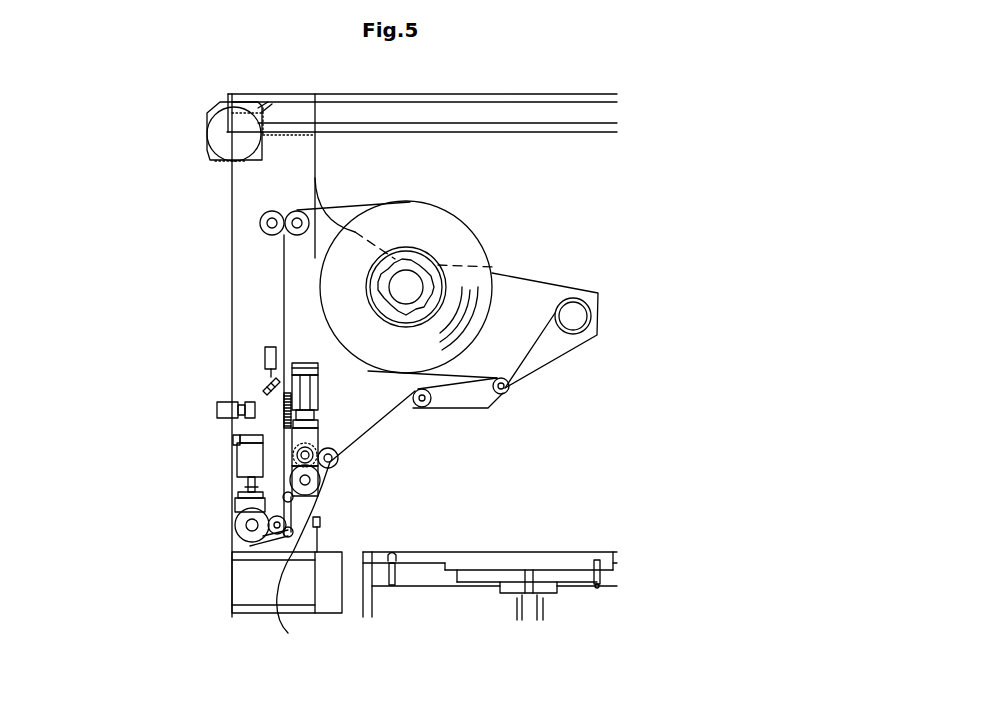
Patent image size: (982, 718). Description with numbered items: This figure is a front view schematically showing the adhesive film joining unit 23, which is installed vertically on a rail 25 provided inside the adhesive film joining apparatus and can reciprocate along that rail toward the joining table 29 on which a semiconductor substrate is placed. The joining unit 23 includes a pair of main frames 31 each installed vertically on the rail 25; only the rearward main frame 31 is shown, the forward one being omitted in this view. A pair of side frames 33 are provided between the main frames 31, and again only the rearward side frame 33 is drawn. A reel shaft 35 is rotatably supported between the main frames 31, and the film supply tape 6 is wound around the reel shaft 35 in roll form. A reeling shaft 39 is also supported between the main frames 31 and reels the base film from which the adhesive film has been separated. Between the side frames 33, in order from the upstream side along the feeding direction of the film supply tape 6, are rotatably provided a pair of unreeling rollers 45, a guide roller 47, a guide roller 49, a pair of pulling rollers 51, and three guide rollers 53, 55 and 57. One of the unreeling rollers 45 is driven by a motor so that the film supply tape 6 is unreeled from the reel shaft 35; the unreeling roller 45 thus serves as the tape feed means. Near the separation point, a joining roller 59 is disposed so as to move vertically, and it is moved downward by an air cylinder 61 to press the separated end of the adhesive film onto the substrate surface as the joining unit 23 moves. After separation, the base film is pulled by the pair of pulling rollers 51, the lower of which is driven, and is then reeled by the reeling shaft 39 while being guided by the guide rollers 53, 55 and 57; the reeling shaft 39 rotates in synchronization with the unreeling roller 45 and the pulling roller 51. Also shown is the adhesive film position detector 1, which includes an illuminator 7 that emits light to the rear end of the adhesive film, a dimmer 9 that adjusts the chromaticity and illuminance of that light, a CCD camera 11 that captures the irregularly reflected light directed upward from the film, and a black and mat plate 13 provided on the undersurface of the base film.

The adhesive film position detector 1 is at (136, 355).
The film supply tape 6 is at (348, 205).
The illuminator 7 is at (264, 391).
The dimmer 9 is at (263, 360).
The CCD camera 11 is at (215, 412).
The black and mat plate 13 is at (287, 416).
The joining unit 23 is at (196, 134).
The rail 25 is at (477, 93).
The joining table 29 is at (603, 552).
The main frame 31 is at (530, 293).
The side frame 33 is at (465, 402).
The reel shaft 35 is at (418, 258).
The reeling shaft 39 is at (580, 310).
The unreeling roller 45 is at (294, 211).
The guide roller 47 is at (238, 508).
The guide roller 49 is at (346, 518).
The pulling roller 51 is at (310, 488).
The guide roller 53 is at (335, 450).
The guide roller 55 is at (425, 408).
The guide roller 57 is at (506, 394).
The joining roller 59 is at (238, 538).
The air cylinder 61 is at (235, 477).